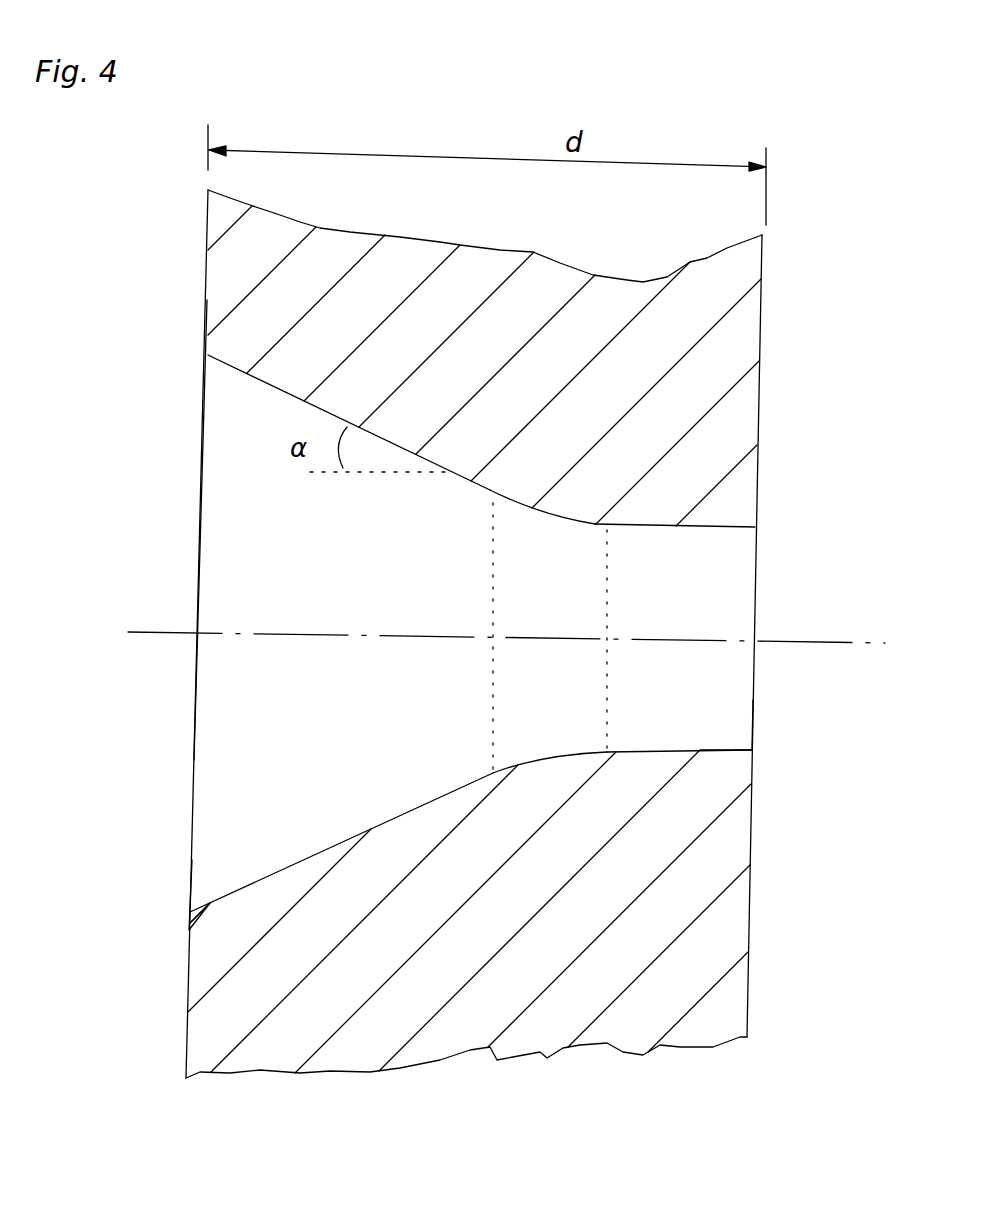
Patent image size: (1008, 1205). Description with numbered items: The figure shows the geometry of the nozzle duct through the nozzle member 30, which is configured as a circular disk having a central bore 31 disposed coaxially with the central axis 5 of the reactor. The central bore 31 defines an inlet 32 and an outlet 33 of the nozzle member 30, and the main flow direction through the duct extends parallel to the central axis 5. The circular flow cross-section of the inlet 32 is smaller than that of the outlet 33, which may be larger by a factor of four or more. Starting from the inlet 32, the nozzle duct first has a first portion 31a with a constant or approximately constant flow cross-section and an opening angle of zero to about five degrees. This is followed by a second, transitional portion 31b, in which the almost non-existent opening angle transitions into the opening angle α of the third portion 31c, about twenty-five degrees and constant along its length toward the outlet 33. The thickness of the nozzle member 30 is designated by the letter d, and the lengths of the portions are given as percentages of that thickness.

The nozzle member 30 is at (625, 1033).
The central bore 31 is at (226, 692).
The first portion 31a is at (675, 638).
The second portion 31b is at (548, 631).
The third portion 31c is at (341, 633).
The inlet 32 is at (753, 735).
The outlet 33 is at (186, 888).
The central axis 5 is at (833, 643).